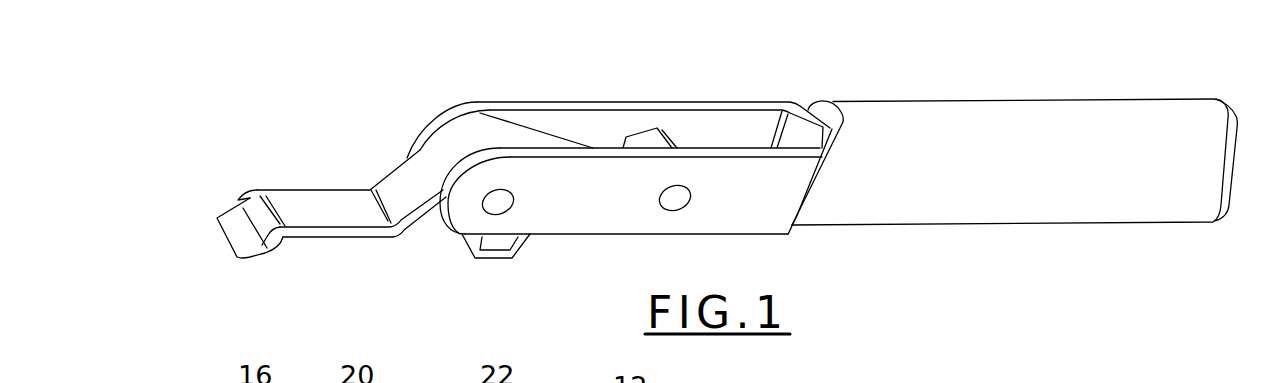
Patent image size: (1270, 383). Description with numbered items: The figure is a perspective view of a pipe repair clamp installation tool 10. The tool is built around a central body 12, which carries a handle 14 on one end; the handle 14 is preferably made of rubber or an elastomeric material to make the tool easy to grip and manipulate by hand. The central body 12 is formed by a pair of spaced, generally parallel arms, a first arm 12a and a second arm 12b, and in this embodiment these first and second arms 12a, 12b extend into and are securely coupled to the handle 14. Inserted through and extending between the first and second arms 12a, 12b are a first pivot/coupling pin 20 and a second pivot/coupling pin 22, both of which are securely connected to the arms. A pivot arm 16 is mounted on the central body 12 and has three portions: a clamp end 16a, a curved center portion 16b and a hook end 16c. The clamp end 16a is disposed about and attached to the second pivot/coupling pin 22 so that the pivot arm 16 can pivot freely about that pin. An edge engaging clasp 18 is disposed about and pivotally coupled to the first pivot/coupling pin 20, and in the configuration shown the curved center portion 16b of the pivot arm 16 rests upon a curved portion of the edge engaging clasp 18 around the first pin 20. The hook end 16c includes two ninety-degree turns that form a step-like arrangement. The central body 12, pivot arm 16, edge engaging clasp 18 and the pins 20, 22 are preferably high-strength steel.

The pipe repair clamp installation tool 10 is at (828, 85).
The central body 12 is at (615, 92).
The first arm 12a is at (547, 102).
The second arm 12b is at (578, 220).
The handle 14 is at (880, 185).
The pivot arm 16 is at (390, 170).
The clamp end 16a is at (652, 135).
The curved center portion 16b is at (483, 133).
The hook end 16c is at (242, 218).
The edge engaging clasp 18 is at (483, 257).
The first pivot/coupling pin 20 is at (483, 205).
The second pivot/coupling pin 22 is at (663, 205).